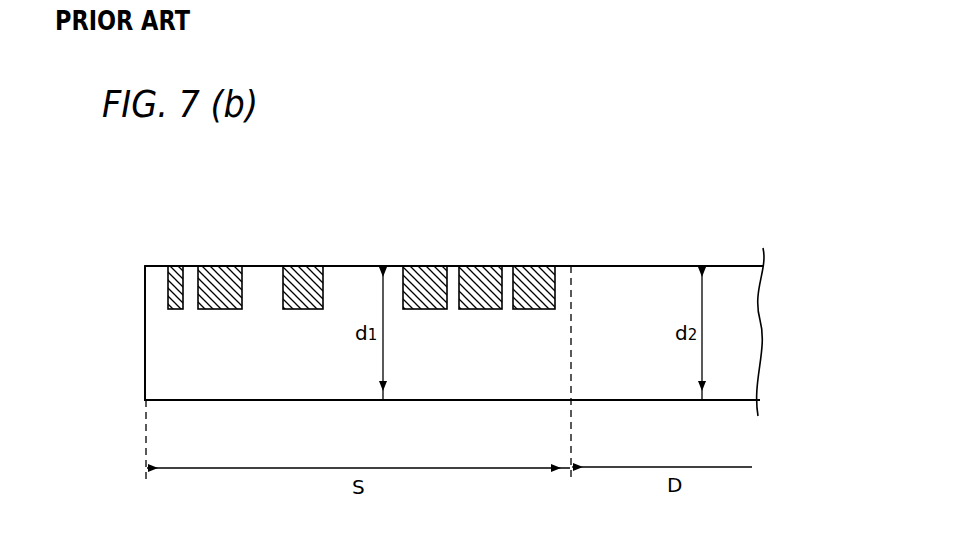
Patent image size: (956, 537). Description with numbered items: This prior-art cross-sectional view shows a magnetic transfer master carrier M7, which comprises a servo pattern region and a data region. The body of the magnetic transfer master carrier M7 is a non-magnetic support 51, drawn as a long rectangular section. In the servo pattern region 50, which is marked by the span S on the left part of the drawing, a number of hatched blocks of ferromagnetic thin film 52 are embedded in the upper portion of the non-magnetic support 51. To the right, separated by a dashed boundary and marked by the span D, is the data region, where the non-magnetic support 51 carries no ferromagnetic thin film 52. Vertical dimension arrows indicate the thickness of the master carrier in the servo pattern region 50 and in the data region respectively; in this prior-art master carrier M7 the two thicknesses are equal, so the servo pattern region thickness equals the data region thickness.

The servo pattern region 50 is at (590, 192).
The non-magnetic support 51 is at (345, 283).
The ferromagnetic thin film 52 is at (424, 269).
The magnetic transfer master carrier M7 is at (733, 263).